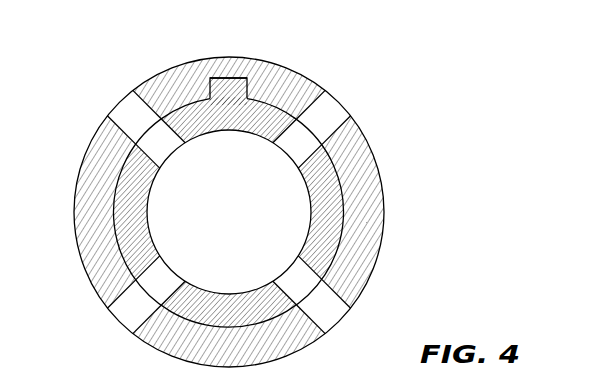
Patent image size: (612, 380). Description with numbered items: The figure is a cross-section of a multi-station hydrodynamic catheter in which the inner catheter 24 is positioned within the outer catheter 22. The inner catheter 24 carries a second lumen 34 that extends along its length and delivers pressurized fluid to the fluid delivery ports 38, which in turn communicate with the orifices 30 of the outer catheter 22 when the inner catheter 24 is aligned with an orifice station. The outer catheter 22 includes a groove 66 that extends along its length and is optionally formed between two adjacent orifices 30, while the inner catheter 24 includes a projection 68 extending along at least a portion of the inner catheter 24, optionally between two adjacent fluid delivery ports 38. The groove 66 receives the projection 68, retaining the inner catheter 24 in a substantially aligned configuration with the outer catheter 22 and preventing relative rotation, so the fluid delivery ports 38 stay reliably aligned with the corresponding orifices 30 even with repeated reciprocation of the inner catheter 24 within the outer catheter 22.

The outer catheter 22 is at (90, 162).
The inner catheter 24 is at (133, 219).
The orifices 30 is at (127, 110).
The second lumen 34 is at (282, 216).
The fluid delivery ports 38 is at (162, 145).
The groove 66 is at (235, 77).
The projection 68 is at (226, 84).